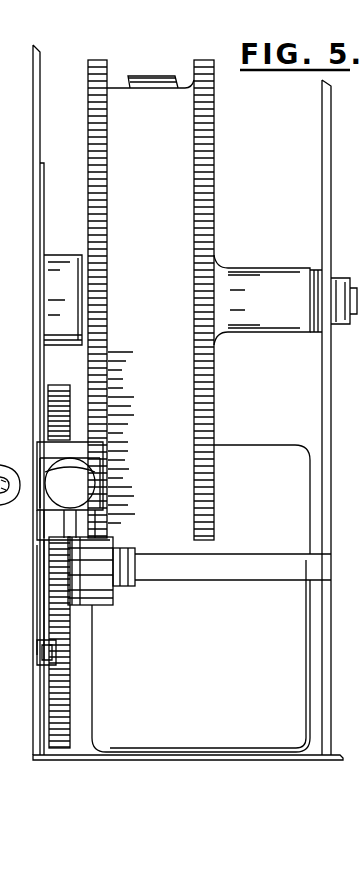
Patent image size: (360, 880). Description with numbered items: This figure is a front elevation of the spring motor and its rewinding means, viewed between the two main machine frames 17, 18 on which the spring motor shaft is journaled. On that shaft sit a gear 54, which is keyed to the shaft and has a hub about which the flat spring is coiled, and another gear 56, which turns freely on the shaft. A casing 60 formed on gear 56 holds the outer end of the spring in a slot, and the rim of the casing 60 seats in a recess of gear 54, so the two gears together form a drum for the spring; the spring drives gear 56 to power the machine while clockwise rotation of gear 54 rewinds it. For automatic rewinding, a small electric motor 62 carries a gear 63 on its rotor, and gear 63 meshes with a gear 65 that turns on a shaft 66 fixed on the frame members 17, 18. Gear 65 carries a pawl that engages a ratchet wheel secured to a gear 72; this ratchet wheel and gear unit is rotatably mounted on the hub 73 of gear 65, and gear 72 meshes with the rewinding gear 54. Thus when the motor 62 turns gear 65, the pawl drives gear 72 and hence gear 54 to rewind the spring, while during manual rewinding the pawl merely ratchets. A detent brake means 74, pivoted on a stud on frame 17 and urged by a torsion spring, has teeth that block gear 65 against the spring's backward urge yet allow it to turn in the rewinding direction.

The main machine frame 17 is at (50, 100).
The main machine frame 18 is at (322, 206).
The casing 60 is at (162, 190).
The gear 56 is at (194, 258).
The gear 54 is at (108, 390).
The electric motor 62 is at (268, 634).
The gear 63 is at (88, 636).
The gear 65 is at (58, 688).
The shaft 66 is at (233, 569).
The gear 72 is at (108, 592).
The hub 73 is at (130, 550).
The detent brake means 74 is at (58, 648).